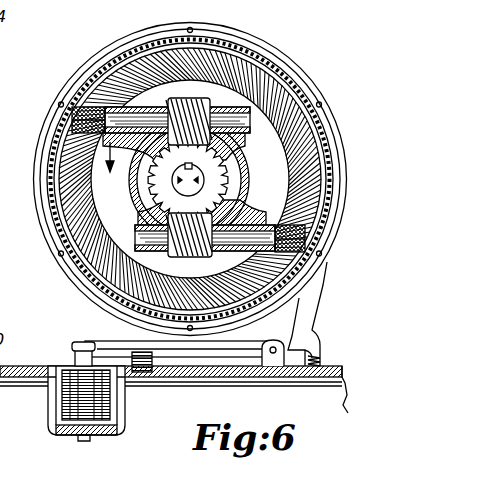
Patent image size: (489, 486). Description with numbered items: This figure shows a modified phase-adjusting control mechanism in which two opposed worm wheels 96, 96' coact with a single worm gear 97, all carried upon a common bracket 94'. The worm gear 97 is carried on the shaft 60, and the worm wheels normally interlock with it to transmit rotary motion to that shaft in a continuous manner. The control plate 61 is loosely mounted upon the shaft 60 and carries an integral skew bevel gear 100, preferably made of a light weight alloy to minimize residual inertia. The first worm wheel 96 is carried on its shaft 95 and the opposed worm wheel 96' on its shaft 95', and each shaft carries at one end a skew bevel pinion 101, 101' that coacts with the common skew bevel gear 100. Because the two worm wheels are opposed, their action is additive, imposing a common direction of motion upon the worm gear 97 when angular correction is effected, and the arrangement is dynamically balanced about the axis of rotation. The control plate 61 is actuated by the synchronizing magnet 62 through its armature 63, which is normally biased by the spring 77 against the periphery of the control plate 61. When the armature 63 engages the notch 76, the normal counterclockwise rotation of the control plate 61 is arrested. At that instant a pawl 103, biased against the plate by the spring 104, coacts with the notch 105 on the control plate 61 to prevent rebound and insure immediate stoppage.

The notch 76 is at (217, 27).
The notch 105 is at (110, 55).
The control plate 61 is at (308, 84).
The skew bevel pinion 101 is at (57, 120).
The worm wheel 96 is at (189, 114).
The shaft 95 is at (186, 126).
The common bracket 94' is at (187, 180).
The worm gear 97 is at (212, 193).
The skew bevel gear 100 is at (111, 176).
The shaft 60 is at (176, 172).
The shaft 95' is at (190, 234).
The worm wheel 96' is at (189, 247).
The skew bevel pinion 101' is at (315, 238).
The pawl 103 is at (318, 300).
The spring 104 is at (322, 364).
The synchronizing magnet 62 is at (62, 398).
The spring 77 is at (166, 378).
The armature 63 is at (228, 356).